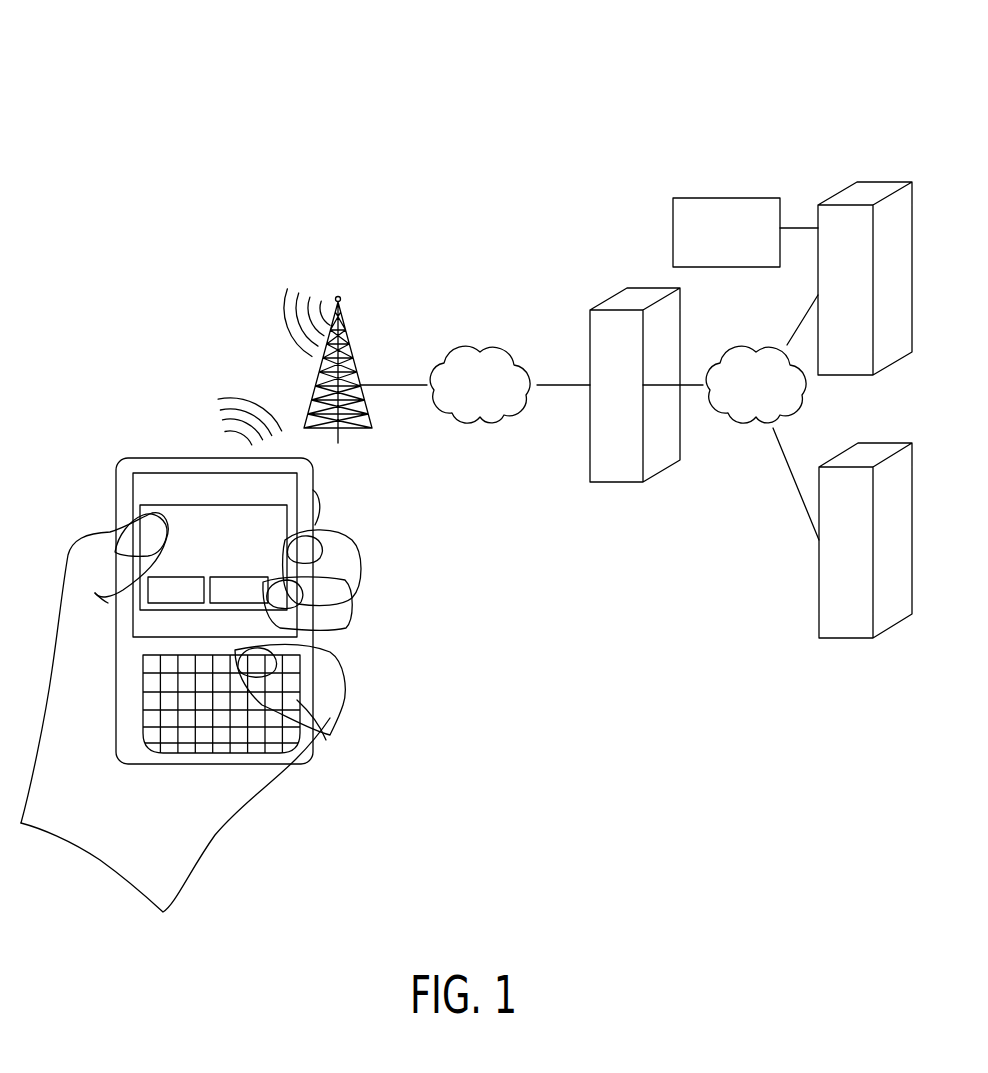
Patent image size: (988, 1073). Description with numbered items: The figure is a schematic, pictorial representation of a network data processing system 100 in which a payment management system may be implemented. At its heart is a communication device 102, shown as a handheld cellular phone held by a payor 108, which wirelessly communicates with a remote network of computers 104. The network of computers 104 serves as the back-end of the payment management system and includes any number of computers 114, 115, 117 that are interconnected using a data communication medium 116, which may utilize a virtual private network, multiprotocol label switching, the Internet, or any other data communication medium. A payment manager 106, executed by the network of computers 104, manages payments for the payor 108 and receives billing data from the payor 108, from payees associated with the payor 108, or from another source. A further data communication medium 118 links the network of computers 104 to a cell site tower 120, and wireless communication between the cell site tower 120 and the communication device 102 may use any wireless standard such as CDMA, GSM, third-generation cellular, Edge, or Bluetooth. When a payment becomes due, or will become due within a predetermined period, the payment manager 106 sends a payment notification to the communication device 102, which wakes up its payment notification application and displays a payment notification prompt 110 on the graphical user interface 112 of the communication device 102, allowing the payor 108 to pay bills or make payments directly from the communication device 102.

The network data processing system 100 is at (162, 83).
The communication device 102 is at (112, 475).
The network of computers 104 is at (731, 490).
The payment manager 106 is at (708, 198).
The payor 108 is at (261, 786).
The payment notification prompt 110 is at (193, 505).
The graphical user interface 112 is at (150, 473).
The computer 114 is at (632, 403).
The computer 115 is at (862, 297).
The data communication medium 116 is at (773, 398).
The computer 117 is at (863, 560).
The data communication medium 118 is at (497, 398).
The cell site tower 120 is at (345, 345).